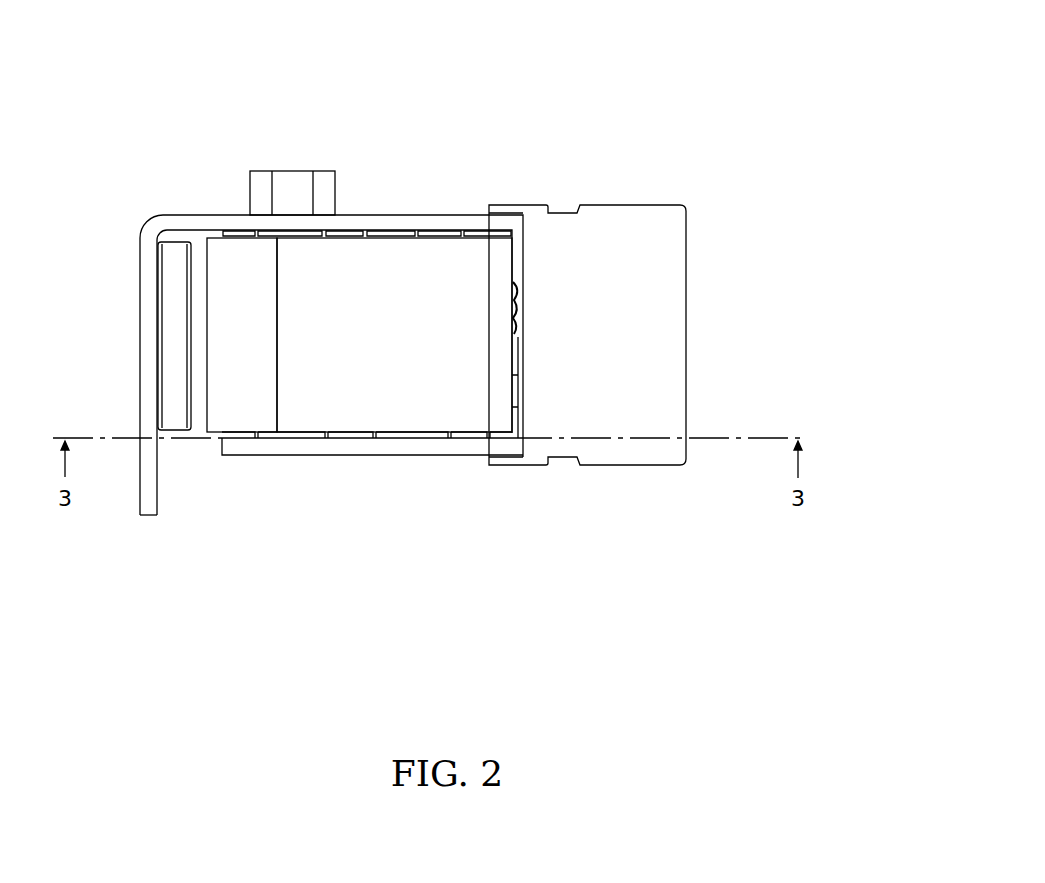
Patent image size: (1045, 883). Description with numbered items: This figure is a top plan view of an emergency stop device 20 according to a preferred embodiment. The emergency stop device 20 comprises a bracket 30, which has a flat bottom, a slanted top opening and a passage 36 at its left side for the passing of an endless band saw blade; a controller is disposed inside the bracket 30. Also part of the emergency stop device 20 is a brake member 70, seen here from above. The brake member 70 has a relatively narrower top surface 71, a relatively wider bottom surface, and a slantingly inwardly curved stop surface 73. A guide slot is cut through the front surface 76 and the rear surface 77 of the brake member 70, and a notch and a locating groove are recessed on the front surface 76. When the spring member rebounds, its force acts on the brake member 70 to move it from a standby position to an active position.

The emergency stop device 20 is at (617, 135).
The bracket 30 is at (140, 272).
The passage 36 is at (177, 240).
The brake member 70 is at (201, 352).
The top surface 71 is at (225, 315).
The stop surface 73 is at (397, 268).
The front surface 76 is at (373, 433).
The rear surface 77 is at (368, 233).